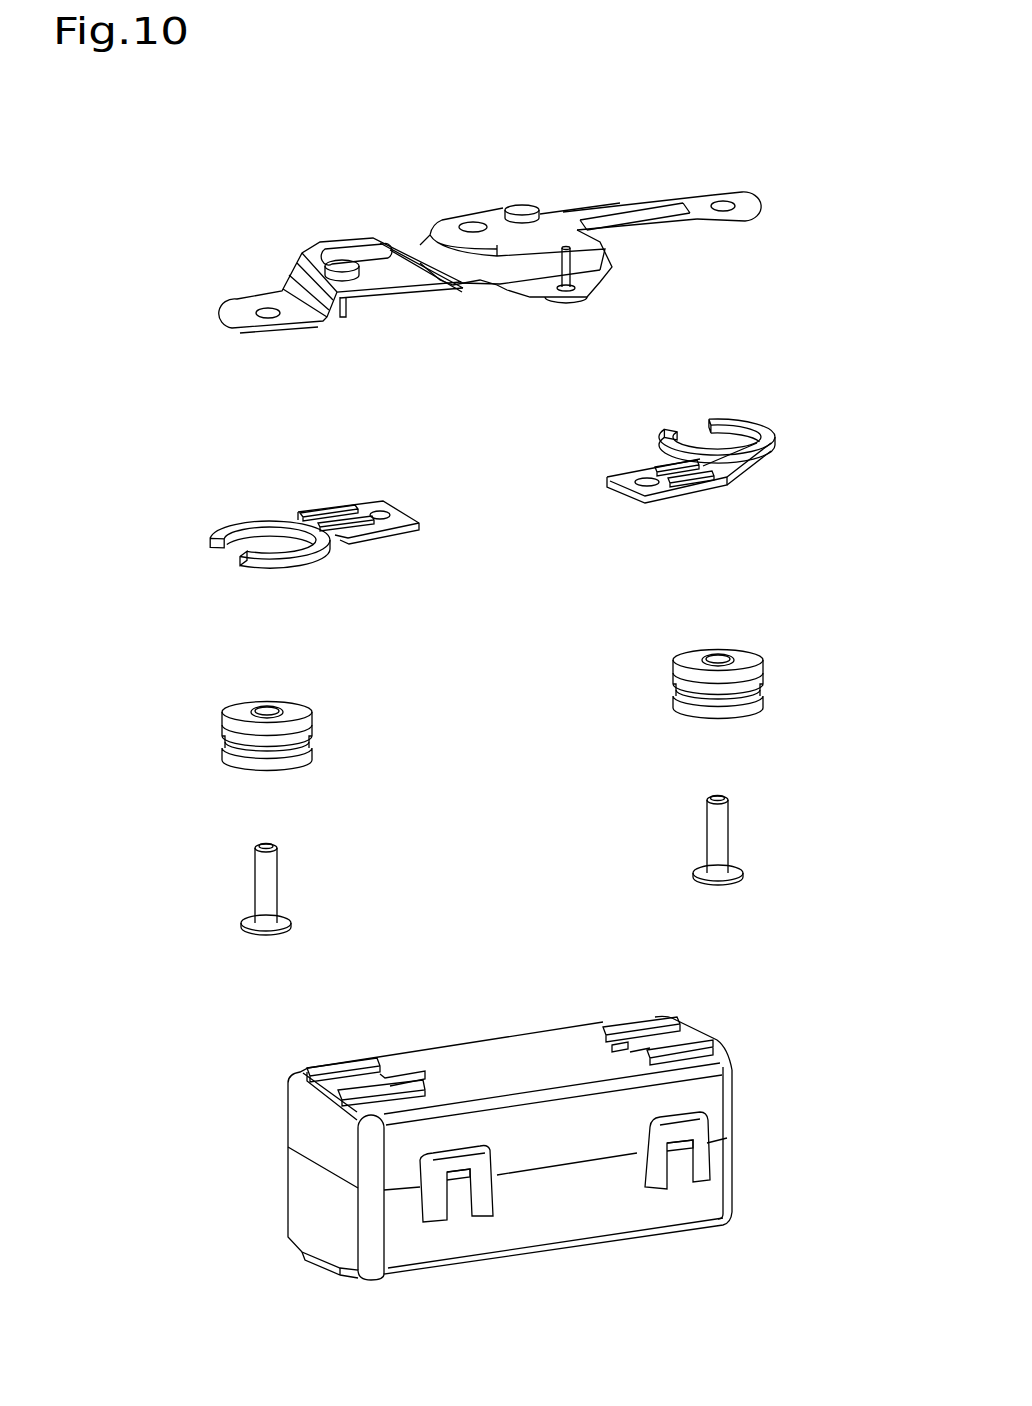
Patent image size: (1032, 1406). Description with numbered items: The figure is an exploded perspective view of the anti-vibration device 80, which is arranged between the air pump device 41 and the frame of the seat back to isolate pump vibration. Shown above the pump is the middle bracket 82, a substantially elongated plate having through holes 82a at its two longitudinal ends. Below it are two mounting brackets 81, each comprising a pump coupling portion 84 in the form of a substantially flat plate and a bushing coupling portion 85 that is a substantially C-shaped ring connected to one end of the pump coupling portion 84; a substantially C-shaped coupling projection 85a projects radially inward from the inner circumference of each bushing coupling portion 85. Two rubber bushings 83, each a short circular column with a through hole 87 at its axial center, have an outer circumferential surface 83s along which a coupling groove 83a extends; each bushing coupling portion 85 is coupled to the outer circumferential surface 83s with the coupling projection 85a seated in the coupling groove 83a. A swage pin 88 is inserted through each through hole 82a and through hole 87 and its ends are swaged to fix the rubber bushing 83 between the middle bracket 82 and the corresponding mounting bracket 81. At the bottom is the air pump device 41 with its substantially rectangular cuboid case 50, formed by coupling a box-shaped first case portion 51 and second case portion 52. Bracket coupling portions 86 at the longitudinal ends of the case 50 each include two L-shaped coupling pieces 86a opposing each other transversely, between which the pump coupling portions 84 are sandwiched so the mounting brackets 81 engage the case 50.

The anti-vibration device 80 is at (146, 136).
The middle bracket 82 is at (455, 213).
The through hole 82a is at (227, 303).
The mounting bracket 81 is at (353, 432).
The pump coupling portion 84 is at (353, 508).
The bushing coupling portion 85 is at (252, 518).
The coupling projection 85a is at (258, 541).
The rubber bushing 83 is at (222, 710).
The through hole 87 is at (264, 706).
The outer circumferential surface 83s is at (313, 726).
The coupling groove 83a is at (268, 748).
The swage pin 88 is at (257, 845).
The air pump device 41 is at (140, 1001).
The case 50 is at (837, 1092).
The second case portion 52 is at (733, 1108).
The first case portion 51 is at (733, 1160).
The bracket coupling portion 86 is at (390, 1077).
The coupling piece 86a is at (510, 1061).